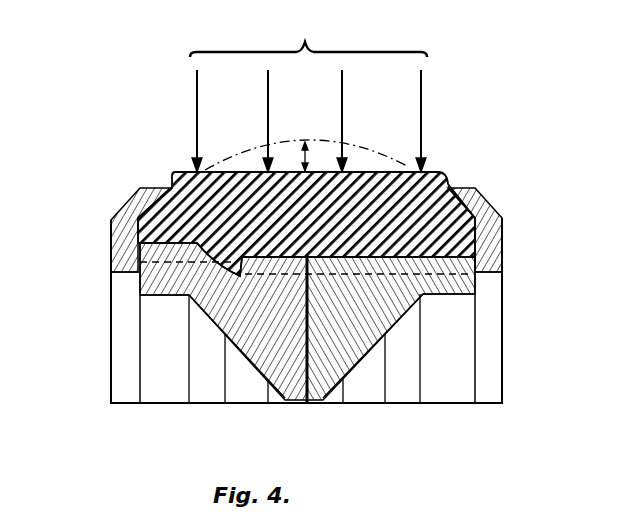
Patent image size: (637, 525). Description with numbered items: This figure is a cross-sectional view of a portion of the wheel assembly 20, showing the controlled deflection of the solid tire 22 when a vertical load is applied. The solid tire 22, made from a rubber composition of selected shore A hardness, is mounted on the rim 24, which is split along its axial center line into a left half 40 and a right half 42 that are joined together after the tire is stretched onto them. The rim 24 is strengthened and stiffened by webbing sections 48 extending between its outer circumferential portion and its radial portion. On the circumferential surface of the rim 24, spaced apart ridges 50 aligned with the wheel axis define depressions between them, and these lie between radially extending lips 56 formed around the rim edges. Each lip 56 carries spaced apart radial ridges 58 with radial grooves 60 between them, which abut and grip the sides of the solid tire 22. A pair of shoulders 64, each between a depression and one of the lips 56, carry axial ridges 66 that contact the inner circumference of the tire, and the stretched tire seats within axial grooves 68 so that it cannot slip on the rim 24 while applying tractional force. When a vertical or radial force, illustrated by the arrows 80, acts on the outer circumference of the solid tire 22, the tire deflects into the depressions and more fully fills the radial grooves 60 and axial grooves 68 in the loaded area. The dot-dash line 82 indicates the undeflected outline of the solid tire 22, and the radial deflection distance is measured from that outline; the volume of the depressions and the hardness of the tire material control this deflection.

The wheel assembly 20 is at (96, 437).
The solid tire 22 is at (440, 166).
The rim 24 is at (497, 394).
The left half 40 is at (102, 325).
The right half 42 is at (512, 302).
The webbing sections 48 is at (260, 367).
The ridges 50 is at (212, 305).
The lips 56 is at (118, 213).
The radial ridges 58 is at (453, 213).
The radial grooves 60 is at (149, 206).
The shoulders 64 is at (147, 283).
The axial ridges 66 is at (147, 248).
The axial grooves 68 is at (478, 246).
The arrows 80 is at (308, 91).
The dot-dash line 82 is at (303, 135).